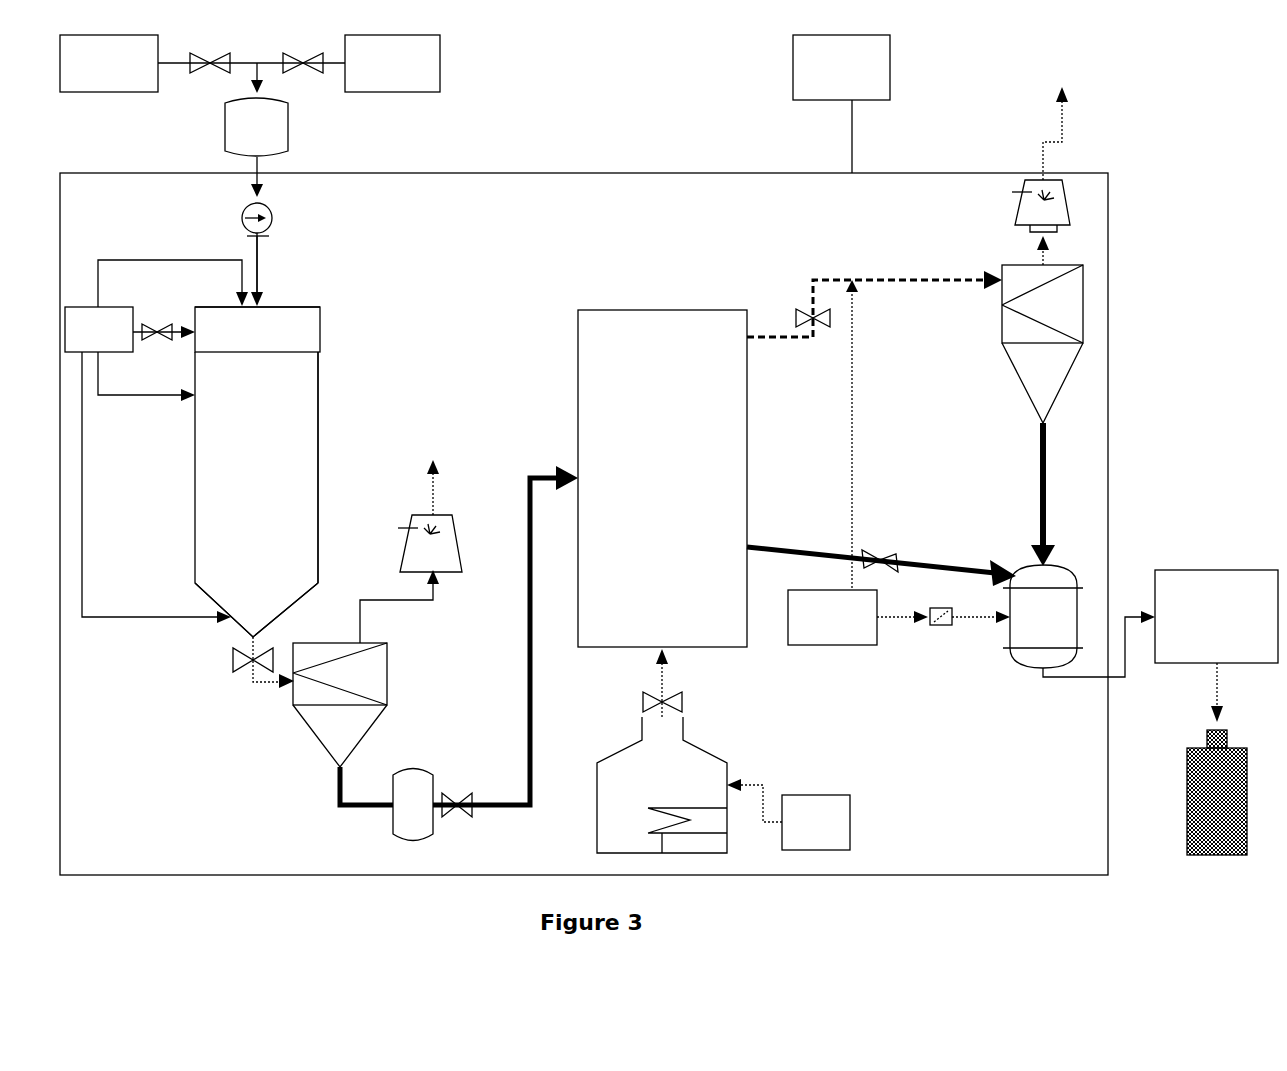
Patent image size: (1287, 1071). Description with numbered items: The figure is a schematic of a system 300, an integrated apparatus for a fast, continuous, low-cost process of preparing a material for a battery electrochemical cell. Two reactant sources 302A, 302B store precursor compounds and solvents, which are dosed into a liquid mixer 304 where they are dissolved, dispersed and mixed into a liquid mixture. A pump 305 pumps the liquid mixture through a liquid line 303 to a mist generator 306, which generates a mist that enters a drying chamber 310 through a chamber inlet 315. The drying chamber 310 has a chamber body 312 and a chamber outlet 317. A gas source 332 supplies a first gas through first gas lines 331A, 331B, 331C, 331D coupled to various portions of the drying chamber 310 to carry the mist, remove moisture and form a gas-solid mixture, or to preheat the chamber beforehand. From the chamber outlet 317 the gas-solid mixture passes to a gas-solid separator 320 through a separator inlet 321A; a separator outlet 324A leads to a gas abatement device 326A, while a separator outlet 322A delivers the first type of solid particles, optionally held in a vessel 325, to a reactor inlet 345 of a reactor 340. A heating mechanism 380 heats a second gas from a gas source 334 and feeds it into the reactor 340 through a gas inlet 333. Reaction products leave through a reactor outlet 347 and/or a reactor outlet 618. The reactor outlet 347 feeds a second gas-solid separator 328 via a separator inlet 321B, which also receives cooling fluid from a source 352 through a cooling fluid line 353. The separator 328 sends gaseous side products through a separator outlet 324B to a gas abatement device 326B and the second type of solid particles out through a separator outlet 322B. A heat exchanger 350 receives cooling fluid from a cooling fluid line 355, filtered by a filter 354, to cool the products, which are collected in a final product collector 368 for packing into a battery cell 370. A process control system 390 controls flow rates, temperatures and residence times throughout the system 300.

The system 300 is at (583, 173).
The reactant source 302A is at (158, 63).
The reactant source 302B is at (348, 63).
The liquid line 303 is at (260, 274).
The liquid mixer 304 is at (256, 130).
The pump 305 is at (273, 216).
The mist generator 306 is at (257, 329).
The drying chamber 310 is at (256, 494).
The chamber body 312 is at (320, 504).
The chamber inlet 315 is at (266, 306).
The chamber outlet 317 is at (250, 633).
The gas-solid separator 320 is at (340, 705).
The separator inlet 321A is at (270, 684).
The separator inlet 321B is at (980, 285).
The separator outlet 322A is at (343, 783).
The separator outlet 322B is at (1035, 448).
The separator outlet 324A is at (360, 627).
The separator outlet 324B is at (1045, 254).
The vessel 325 is at (436, 778).
The gas abatement device 326A is at (458, 548).
The gas abatement device 326B is at (1016, 212).
The gas-solid separator 328 is at (1042, 344).
The first gas line 331A is at (185, 328).
The first gas line 331B is at (200, 259).
The first gas line 331C is at (140, 397).
The first gas line 331D is at (138, 616).
The gas source 332 is at (99, 329).
The gas inlet 333 is at (663, 672).
The gas source 334 is at (788, 814).
The reactor 340 is at (662, 478).
The reactor inlet 345 is at (576, 472).
The reactor outlet 347 is at (748, 343).
The heat exchanger 350 is at (1043, 616).
The source 352 is at (858, 617).
The cooling fluid line 353 is at (852, 435).
The filter 354 is at (950, 627).
The cooling fluid line 355 is at (980, 620).
The final product collector 368 is at (1216, 616).
The battery cell 370 is at (1188, 785).
The heating mechanism 380 is at (662, 785).
The process control system 390 is at (841, 104).
The reactor outlet 618 is at (818, 546).